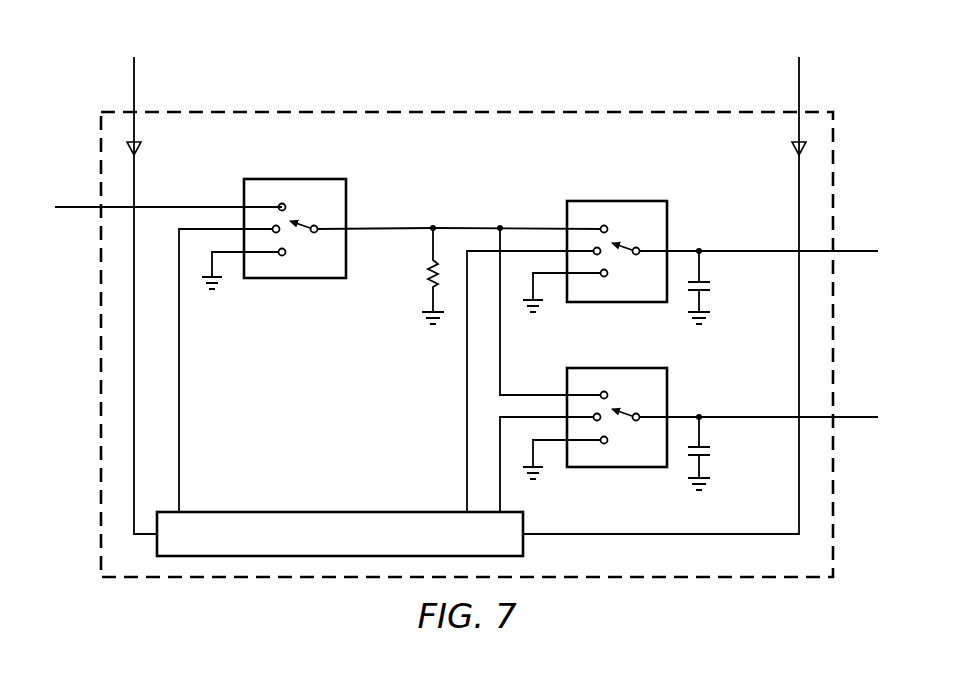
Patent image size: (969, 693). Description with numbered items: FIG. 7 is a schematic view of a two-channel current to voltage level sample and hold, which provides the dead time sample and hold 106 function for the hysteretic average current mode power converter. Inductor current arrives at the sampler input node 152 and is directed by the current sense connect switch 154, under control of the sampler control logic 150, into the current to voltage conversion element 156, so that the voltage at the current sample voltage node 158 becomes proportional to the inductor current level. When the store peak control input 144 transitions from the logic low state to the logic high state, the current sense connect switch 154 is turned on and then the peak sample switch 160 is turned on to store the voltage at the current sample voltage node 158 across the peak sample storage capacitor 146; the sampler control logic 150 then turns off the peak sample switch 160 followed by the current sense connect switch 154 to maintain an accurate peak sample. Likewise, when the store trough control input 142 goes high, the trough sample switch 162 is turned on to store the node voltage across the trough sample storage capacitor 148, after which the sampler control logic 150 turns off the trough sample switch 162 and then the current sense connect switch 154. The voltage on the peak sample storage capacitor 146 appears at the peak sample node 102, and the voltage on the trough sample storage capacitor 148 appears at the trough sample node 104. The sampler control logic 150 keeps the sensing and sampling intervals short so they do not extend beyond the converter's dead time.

The peak sample node 102 is at (855, 251).
The trough sample node 104 is at (855, 418).
The dead time sample and hold 106 is at (521, 108).
The store trough control input 142 is at (134, 90).
The store peak control input 144 is at (799, 92).
The peak sample storage capacitor 146 is at (712, 287).
The trough sample storage capacitor 148 is at (712, 452).
The sampler control logic 150 is at (338, 512).
The sampler input node 152 is at (78, 207).
The current sense connect switch 154 is at (293, 279).
The current to voltage conversion element 156 is at (428, 265).
The current sample voltage node 158 is at (541, 228).
The peak sample switch 160 is at (617, 201).
The trough sample switch 162 is at (617, 467).